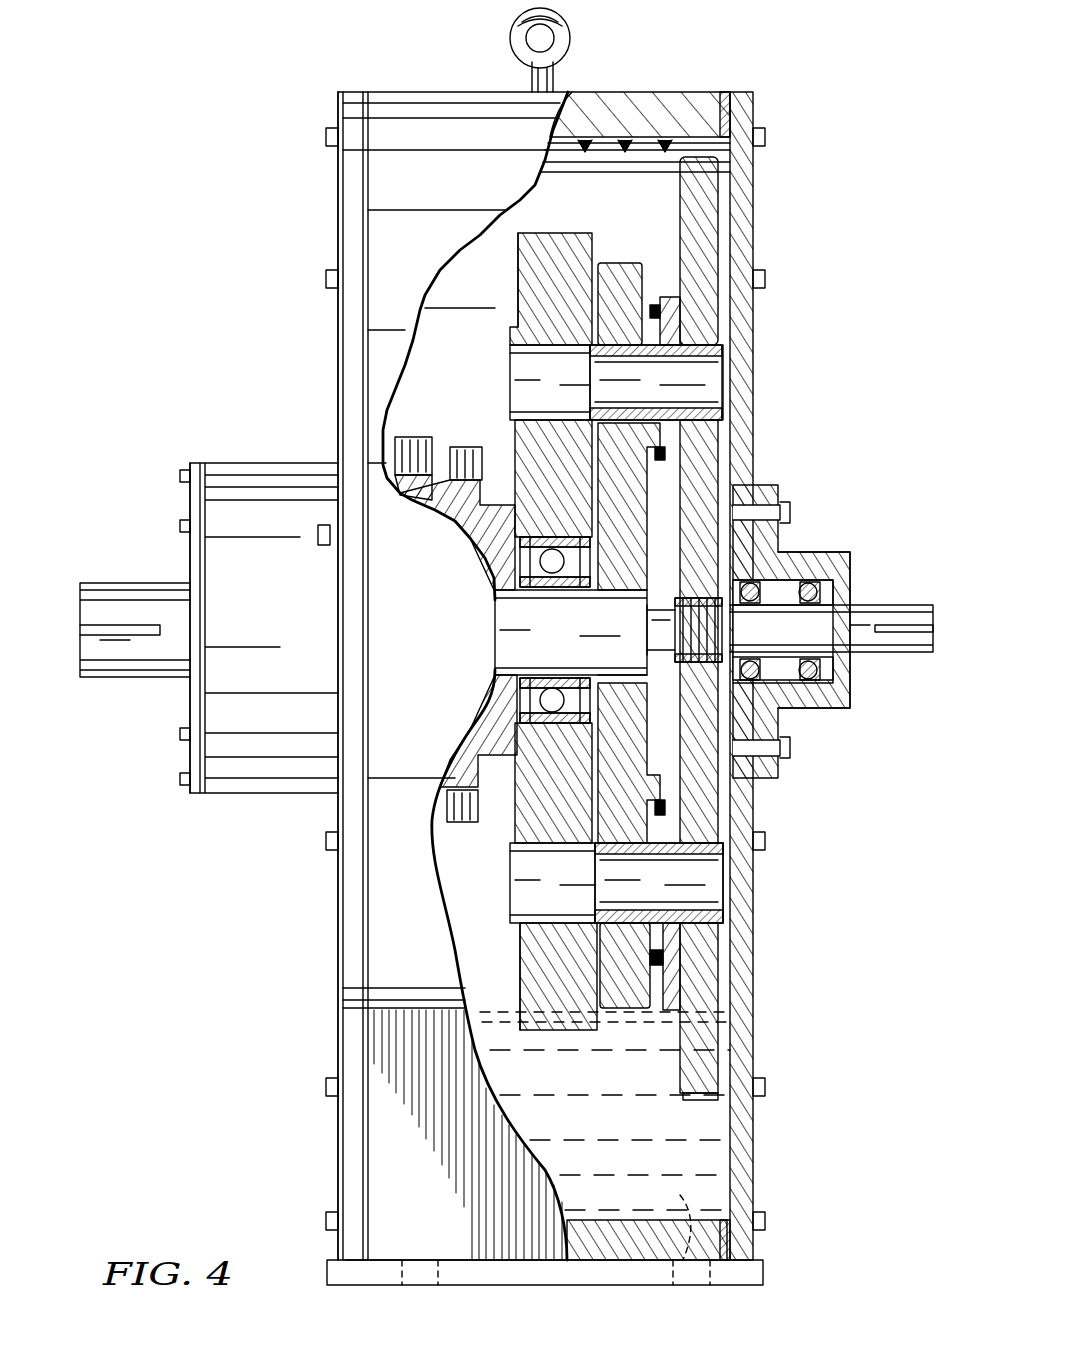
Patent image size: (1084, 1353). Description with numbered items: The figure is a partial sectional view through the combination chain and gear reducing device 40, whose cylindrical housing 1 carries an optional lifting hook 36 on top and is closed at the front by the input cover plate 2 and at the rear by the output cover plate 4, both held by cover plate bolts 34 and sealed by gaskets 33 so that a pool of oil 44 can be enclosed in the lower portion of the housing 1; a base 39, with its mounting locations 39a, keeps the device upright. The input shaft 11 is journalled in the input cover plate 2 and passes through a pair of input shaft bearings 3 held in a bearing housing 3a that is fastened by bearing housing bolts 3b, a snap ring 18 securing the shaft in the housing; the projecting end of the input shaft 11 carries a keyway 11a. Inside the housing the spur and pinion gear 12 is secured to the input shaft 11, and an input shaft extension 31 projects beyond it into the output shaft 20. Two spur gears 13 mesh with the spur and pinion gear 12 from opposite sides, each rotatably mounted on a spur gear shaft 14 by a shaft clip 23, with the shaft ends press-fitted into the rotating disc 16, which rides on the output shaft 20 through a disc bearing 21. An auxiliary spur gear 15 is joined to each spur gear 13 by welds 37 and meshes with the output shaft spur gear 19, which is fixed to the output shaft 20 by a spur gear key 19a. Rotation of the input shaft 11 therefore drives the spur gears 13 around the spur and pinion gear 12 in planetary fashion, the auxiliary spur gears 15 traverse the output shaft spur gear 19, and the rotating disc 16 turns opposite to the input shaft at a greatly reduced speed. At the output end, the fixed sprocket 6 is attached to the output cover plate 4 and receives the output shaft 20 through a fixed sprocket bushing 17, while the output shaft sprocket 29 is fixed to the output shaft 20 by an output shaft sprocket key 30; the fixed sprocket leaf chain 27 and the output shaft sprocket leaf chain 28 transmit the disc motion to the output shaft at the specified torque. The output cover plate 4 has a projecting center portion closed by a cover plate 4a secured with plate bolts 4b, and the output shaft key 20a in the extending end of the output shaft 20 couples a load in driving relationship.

The cylindrical housing 1 is at (680, 66).
The input cover plate 2 is at (753, 195).
The input shaft bearings 3 is at (775, 555).
The bearing housing 3a is at (830, 555).
The bearing housing bolts 3b is at (790, 510).
The output cover plate 4 is at (330, 430).
The cover plate 4a is at (200, 545).
The plate bolts 4b is at (182, 525).
The fixed sprocket 6 is at (425, 475).
The input shaft 11 is at (860, 608).
The output shaft keyway 11a is at (893, 625).
The spur and pinion gear 12 is at (690, 598).
The spur gears 13 is at (690, 212).
The spur gear shaft 14 is at (616, 634).
The auxiliary spur gear 15 is at (625, 263).
The rotating disc 16 is at (515, 248).
The fixed sprocket bushing 17 is at (718, 340).
The snap ring 18 is at (575, 965).
The output shaft spur gear 19 is at (615, 530).
The spur gear key 19a is at (615, 675).
The output shaft 20 is at (130, 590).
The output shaft key 20a is at (130, 637).
The disc bearing 21 is at (578, 723).
The shaft clip 23 is at (753, 418).
The fixed sprocket leaf chain 27 is at (412, 436).
The output shaft sprocket leaf chain 28 is at (463, 446).
The output shaft sprocket 29 is at (500, 500).
The output shaft sprocket key 30 is at (498, 683).
The input shaft extension 31 is at (663, 612).
The gaskets 33 is at (718, 96).
The cover plate bolts 34 is at (326, 137).
The lifting hook 36 is at (568, 32).
The welds 37 is at (655, 305).
The base 39 is at (320, 1268).
The base plate holes 39a is at (428, 1265).
The combination chain and gear reducing device 40 is at (262, 98).
The oil 44 is at (605, 1111).